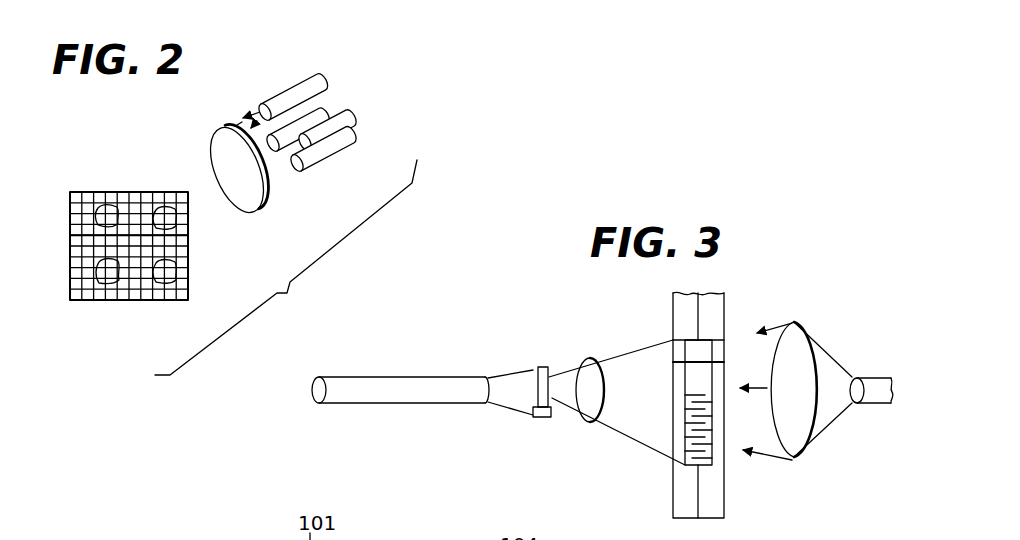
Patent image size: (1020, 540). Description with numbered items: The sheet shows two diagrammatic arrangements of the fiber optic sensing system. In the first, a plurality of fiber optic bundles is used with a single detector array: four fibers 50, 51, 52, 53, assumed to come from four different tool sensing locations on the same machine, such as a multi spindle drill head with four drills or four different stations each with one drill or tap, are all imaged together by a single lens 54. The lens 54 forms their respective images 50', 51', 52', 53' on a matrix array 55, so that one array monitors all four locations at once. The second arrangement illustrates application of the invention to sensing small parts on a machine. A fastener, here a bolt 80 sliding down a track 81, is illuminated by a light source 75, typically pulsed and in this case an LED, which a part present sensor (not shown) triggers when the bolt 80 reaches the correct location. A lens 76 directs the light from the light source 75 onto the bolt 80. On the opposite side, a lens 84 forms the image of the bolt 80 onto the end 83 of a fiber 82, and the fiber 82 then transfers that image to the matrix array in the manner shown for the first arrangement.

In FIG. 2, the fiber 50 is at (293, 76).
In FIG. 2, the fiber 51 is at (354, 117).
In FIG. 2, the fiber 52 is at (319, 99).
In FIG. 2, the fiber 53 is at (331, 164).
In FIG. 2, the single lens 54 is at (218, 131).
In FIG. 2, the matrix array 55 is at (133, 300).
In FIG. 2, the image of fiber 50 50' is at (201, 276).
In FIG. 2, the image of fiber 51 51' is at (75, 268).
In FIG. 2, the image of fiber 52 52' is at (165, 184).
In FIG. 2, the image of fiber 53 53' is at (91, 183).
In FIG. 3, the light source 75 is at (873, 383).
In FIG. 3, the lens 76 is at (794, 458).
In FIG. 3, the bolt 80 is at (723, 342).
In FIG. 3, the track 81 is at (720, 505).
In FIG. 3, the fiber 82 is at (408, 382).
In FIG. 3, the end of fiber 83 is at (545, 367).
In FIG. 3, the lens 84 is at (592, 360).